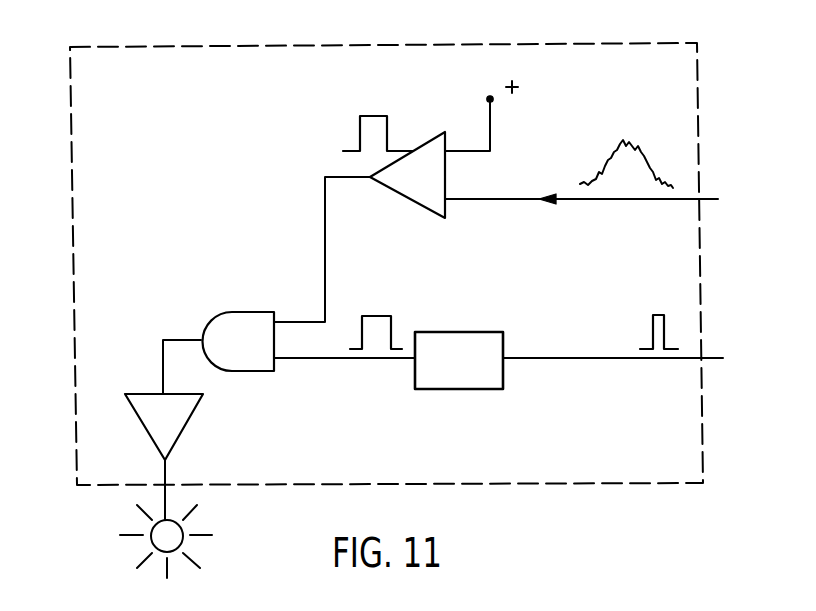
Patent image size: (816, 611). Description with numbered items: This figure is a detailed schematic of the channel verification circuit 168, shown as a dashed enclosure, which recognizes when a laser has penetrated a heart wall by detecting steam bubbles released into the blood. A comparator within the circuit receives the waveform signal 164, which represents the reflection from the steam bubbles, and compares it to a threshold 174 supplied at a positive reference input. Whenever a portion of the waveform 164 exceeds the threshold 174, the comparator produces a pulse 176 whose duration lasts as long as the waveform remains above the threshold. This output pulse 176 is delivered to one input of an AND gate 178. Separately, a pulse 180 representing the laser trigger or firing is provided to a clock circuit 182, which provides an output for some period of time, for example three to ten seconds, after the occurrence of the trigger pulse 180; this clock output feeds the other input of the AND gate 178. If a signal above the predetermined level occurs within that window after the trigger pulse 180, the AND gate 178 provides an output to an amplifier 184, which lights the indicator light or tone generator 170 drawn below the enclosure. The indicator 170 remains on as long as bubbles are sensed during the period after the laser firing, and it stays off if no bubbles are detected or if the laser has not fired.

The waveform signal 164 is at (622, 140).
The channel verification circuit 168 is at (538, 44).
The indicator light or tone generator 170 is at (150, 527).
The threshold 174 is at (486, 97).
The pulse 176 is at (358, 130).
The AND gate 178 is at (415, 205).
The pulse representing the laser trigger or firing 180 is at (655, 315).
The clock circuit 182 is at (468, 390).
The amplifier 184 is at (195, 413).